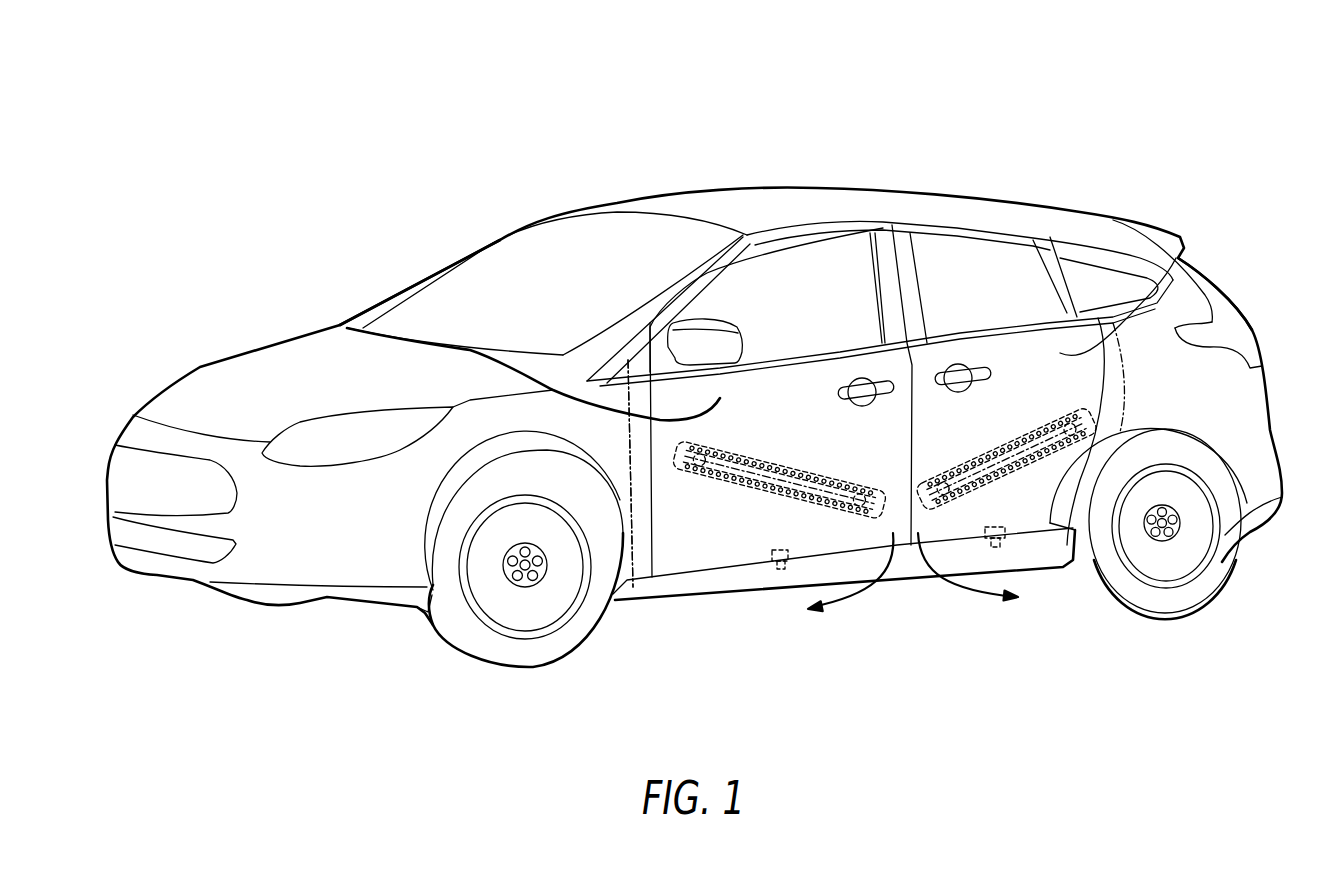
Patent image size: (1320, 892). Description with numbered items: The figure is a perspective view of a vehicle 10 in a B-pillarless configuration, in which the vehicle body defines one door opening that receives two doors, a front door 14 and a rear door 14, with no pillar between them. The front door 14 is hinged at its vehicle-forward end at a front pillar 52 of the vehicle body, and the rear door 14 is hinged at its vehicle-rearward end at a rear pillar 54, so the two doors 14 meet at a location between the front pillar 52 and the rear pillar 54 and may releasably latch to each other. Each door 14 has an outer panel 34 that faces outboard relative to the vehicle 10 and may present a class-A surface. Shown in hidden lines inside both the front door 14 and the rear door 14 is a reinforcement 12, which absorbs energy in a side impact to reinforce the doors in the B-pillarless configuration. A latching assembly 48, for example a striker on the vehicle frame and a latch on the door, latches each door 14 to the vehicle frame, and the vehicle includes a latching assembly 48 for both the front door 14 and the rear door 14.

The vehicle 10 is at (1124, 118).
The reinforcement 12 is at (724, 510).
The vehicle door 14 is at (833, 338).
The outer panel 34 is at (493, 357).
The latching assembly 48 is at (766, 575).
The front pillar 52 is at (627, 447).
The rear pillar 54 is at (1127, 393).